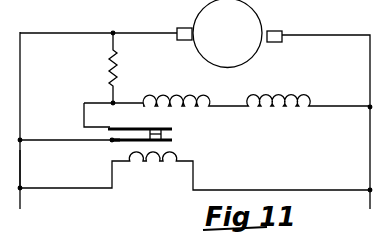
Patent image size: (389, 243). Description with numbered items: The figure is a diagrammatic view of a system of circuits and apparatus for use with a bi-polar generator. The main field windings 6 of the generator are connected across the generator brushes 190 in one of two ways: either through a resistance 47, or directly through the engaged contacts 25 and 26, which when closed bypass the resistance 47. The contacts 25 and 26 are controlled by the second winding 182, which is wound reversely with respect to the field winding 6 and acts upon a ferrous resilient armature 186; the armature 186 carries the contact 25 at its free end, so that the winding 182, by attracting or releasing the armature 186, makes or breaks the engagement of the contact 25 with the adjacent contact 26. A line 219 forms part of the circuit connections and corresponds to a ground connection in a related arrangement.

The resistance 47 is at (108, 70).
The generator brushes 190 is at (193, 41).
The field winding 6 is at (186, 97).
The contact 26 is at (168, 130).
The contact 25 is at (172, 139).
The resilient armature 186 is at (119, 143).
The line 219 is at (22, 171).
The second winding 182 is at (170, 162).